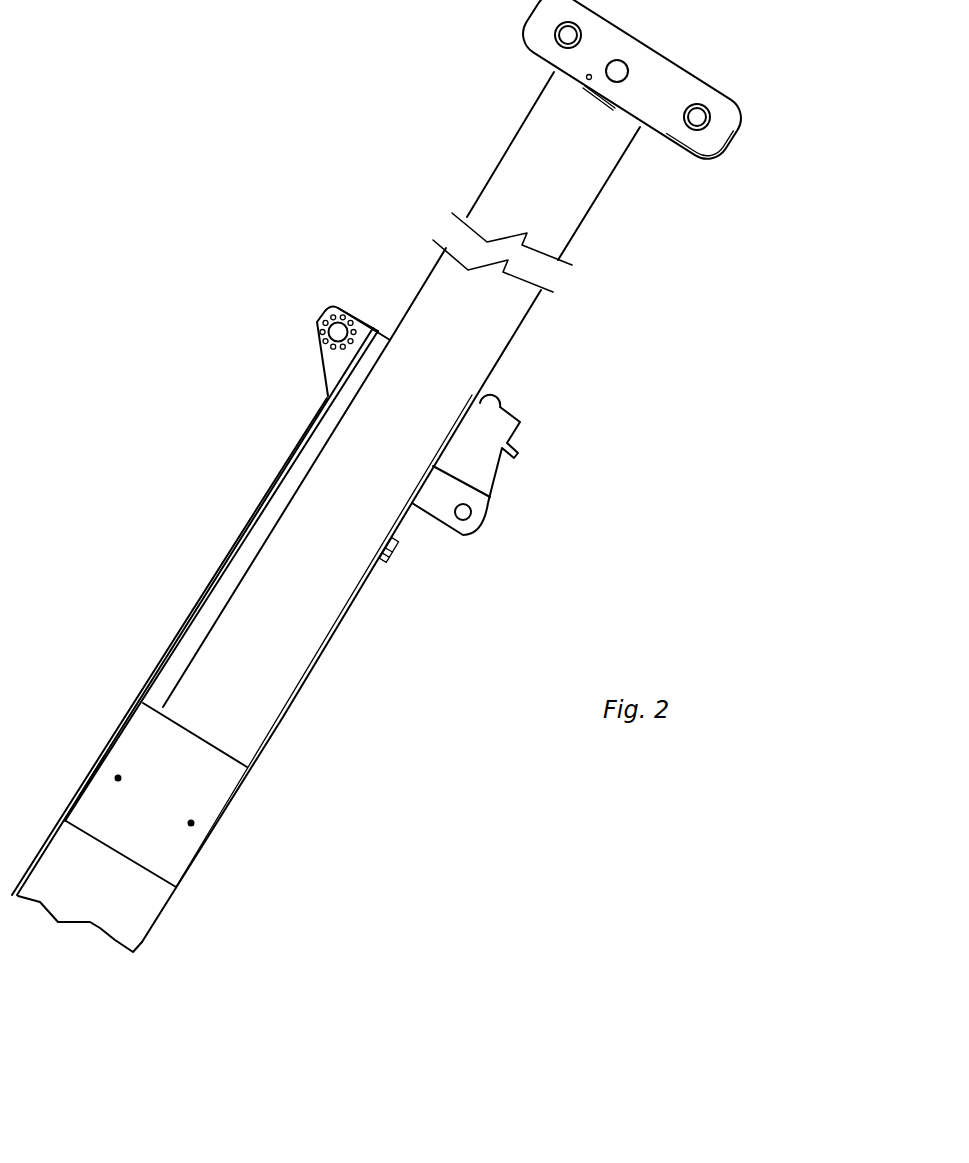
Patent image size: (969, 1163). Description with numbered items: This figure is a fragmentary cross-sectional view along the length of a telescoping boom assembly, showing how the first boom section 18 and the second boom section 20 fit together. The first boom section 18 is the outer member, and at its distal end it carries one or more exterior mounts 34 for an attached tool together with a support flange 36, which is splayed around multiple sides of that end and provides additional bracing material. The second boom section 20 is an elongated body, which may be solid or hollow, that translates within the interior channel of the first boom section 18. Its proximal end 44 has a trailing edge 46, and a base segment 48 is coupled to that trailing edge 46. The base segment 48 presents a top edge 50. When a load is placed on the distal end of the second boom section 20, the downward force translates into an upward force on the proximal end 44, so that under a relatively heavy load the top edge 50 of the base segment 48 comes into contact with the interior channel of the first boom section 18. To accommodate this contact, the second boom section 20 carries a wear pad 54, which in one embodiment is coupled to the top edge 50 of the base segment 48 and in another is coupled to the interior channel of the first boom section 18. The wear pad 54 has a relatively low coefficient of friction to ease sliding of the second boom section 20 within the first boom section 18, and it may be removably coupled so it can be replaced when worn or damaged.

The first boom section 18 is at (135, 917).
The second boom section 20 is at (508, 150).
The exterior mount 34 is at (330, 358).
The support flange 36 is at (440, 508).
The proximal end 44 is at (283, 717).
The trailing edge 46 is at (200, 742).
The base segment 48 is at (162, 852).
The top edge 50 is at (97, 772).
The wear pad 54 is at (127, 720).